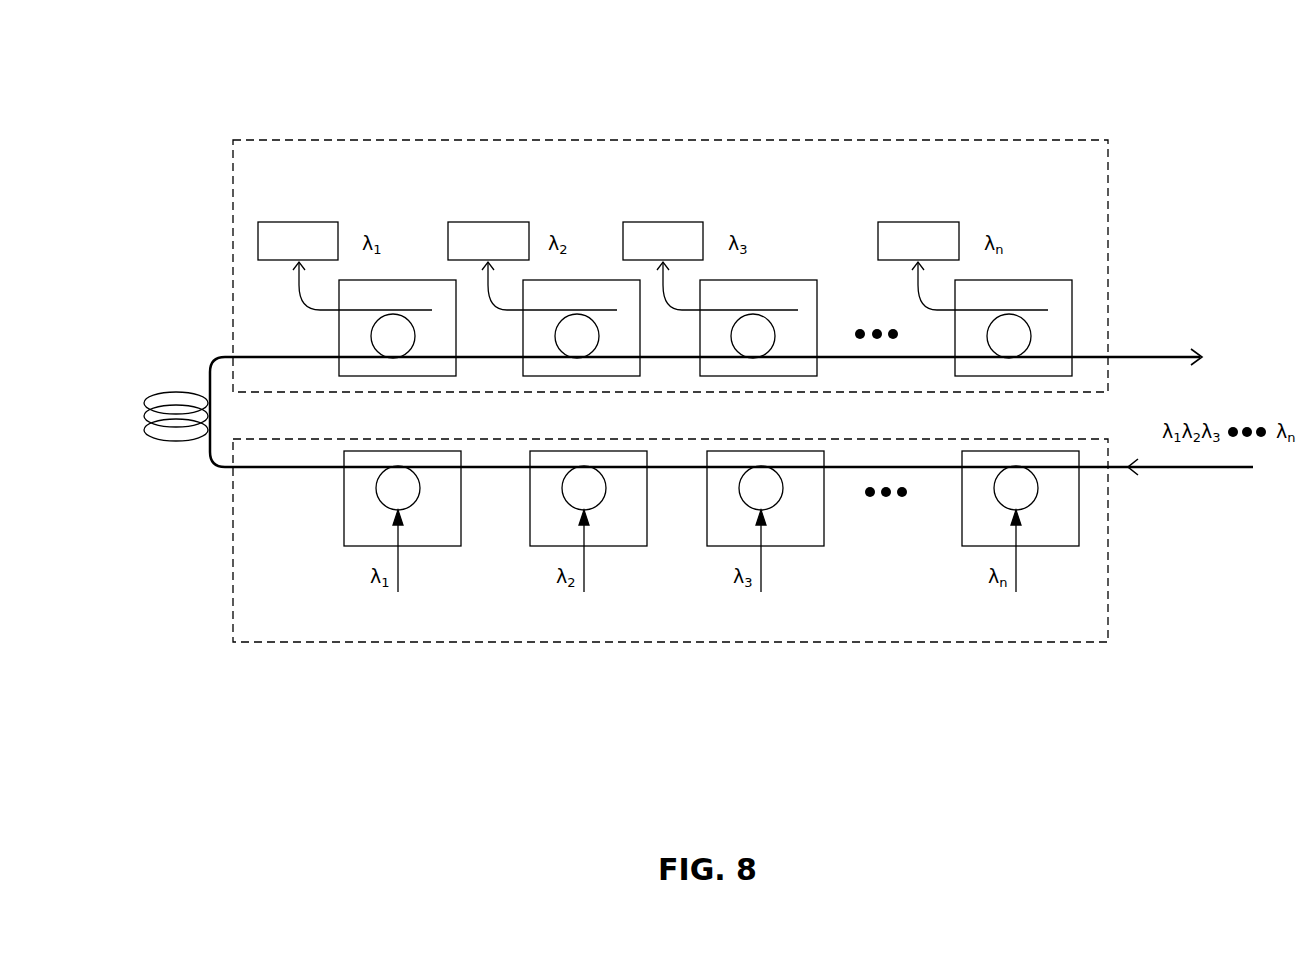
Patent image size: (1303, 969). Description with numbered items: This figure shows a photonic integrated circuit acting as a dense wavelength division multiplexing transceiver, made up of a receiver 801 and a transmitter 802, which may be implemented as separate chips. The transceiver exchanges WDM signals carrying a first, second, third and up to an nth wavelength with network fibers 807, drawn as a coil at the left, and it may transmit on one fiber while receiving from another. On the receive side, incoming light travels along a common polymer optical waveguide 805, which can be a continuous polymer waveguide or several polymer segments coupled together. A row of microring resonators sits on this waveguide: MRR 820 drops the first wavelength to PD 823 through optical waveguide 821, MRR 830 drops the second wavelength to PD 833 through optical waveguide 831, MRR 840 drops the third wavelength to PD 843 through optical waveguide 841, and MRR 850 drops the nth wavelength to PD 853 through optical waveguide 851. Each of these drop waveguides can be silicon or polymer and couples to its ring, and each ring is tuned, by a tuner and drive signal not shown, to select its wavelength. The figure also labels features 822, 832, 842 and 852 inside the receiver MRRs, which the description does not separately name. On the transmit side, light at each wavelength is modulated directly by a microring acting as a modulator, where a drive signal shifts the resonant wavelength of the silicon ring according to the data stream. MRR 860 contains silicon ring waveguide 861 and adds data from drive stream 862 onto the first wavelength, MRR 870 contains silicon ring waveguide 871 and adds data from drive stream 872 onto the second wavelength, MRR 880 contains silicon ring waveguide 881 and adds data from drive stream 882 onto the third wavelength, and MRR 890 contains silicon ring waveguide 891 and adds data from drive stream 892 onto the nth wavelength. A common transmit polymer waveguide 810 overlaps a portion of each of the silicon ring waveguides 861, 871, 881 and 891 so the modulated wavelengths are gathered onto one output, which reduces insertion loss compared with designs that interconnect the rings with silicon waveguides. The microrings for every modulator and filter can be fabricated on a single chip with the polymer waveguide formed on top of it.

The receiver 801 is at (682, 138).
The transmitter 802 is at (680, 642).
The polymer optical waveguide 805 is at (268, 357).
The network fibers 807 is at (168, 392).
The transmit polymer waveguide 810 is at (266, 467).
The MRR 820 is at (405, 280).
The optical waveguide 821 is at (297, 285).
The first ring resonator filter 822 is at (415, 338).
The PD 823 is at (283, 222).
The MRR 830 is at (590, 280).
The optical waveguide 831 is at (483, 282).
The second ring resonator filter 832 is at (599, 338).
The PD 833 is at (482, 222).
The MRR 840 is at (795, 280).
The optical waveguide 841 is at (670, 298).
The third ring resonator filter 842 is at (775, 336).
The PD 843 is at (623, 233).
The MRR 850 is at (1050, 280).
The optical waveguide 851 is at (930, 302).
The nth ring resonator filter 852 is at (1031, 336).
The PD 853 is at (917, 222).
The MRR 860 is at (345, 500).
The silicon ring waveguide 861 is at (382, 503).
The drive stream 862 is at (402, 565).
The MRR 870 is at (530, 500).
The silicon ring waveguide 871 is at (567, 505).
The drive stream 872 is at (585, 565).
The MRR 880 is at (823, 495).
The silicon ring waveguide 881 is at (782, 500).
The drive stream 882 is at (762, 567).
The MRR 890 is at (1079, 497).
The silicon ring waveguide 891 is at (1033, 498).
The drive stream 892 is at (1017, 567).